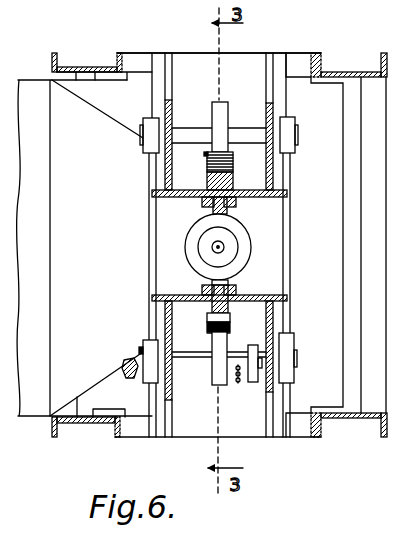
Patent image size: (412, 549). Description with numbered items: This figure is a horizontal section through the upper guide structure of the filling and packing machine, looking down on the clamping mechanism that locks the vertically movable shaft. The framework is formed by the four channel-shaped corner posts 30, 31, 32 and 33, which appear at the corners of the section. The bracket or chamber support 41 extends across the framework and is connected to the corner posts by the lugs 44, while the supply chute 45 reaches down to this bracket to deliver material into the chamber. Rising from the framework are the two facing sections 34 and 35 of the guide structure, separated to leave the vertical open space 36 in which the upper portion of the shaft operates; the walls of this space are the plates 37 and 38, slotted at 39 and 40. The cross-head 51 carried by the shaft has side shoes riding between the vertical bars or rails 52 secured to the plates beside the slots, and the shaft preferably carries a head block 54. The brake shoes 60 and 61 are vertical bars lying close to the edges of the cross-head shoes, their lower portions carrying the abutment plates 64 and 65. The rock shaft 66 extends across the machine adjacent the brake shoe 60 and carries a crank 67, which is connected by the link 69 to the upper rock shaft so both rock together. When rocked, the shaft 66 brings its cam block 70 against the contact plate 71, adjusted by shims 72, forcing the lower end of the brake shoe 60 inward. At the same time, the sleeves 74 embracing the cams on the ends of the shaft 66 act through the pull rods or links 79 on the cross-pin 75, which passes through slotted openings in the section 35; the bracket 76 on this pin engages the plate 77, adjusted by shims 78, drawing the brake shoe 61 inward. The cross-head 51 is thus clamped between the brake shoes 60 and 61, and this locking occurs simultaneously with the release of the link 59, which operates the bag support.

The corner post 30 is at (343, 427).
The corner post 31 is at (368, 70).
The corner post 32 is at (70, 70).
The corner post 33 is at (79, 424).
The guide structure section 34 is at (275, 322).
The guide structure section 35 is at (275, 178).
The vertical open space 36 is at (172, 262).
The plate 37 is at (165, 320).
The plate 38 is at (166, 171).
The vertical slot 39 is at (234, 306).
The vertical slot 40 is at (169, 189).
The bracket or chamber support 41 is at (136, 97).
The lug 44 is at (121, 56).
The supply chute 45 is at (96, 248).
The cross-head 51 is at (205, 210).
The vertical bars or rails 52 is at (201, 203).
The head block 54 is at (243, 250).
The link 59 is at (127, 379).
The brake shoe 60 is at (208, 312).
The brake shoe 61 is at (233, 179).
The abutment plate 64 is at (143, 345).
The abutment plate 65 is at (289, 161).
The rock shaft 66 is at (188, 361).
The crank 67 is at (254, 384).
The link 69 is at (238, 384).
The cam block 70 is at (213, 387).
The contact plate 71 is at (207, 329).
The shims 72 is at (232, 332).
The sleeve 74 is at (290, 375).
The cross-pin 75 is at (246, 132).
The bracket 76 is at (215, 117).
The plate 77 is at (204, 154).
The shims 78 is at (233, 160).
The pull rods or links 79 is at (148, 247).